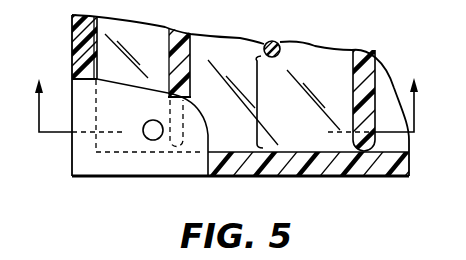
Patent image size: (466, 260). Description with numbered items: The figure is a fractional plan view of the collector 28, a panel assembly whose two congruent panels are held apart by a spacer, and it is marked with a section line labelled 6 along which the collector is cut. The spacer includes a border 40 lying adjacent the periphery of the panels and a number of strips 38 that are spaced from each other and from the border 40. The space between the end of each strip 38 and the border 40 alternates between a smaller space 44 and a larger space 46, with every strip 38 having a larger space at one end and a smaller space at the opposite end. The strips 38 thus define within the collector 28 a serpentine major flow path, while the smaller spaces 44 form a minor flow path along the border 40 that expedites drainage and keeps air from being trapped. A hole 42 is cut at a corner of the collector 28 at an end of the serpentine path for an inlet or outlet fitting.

The collector 28 is at (332, 34).
The strips 38 is at (180, 35).
The border 40 is at (79, 24).
The hole 42 is at (150, 140).
The smaller space 44 is at (343, 153).
The larger space 46 is at (256, 96).
The section line 6- 6 is at (228, 89).